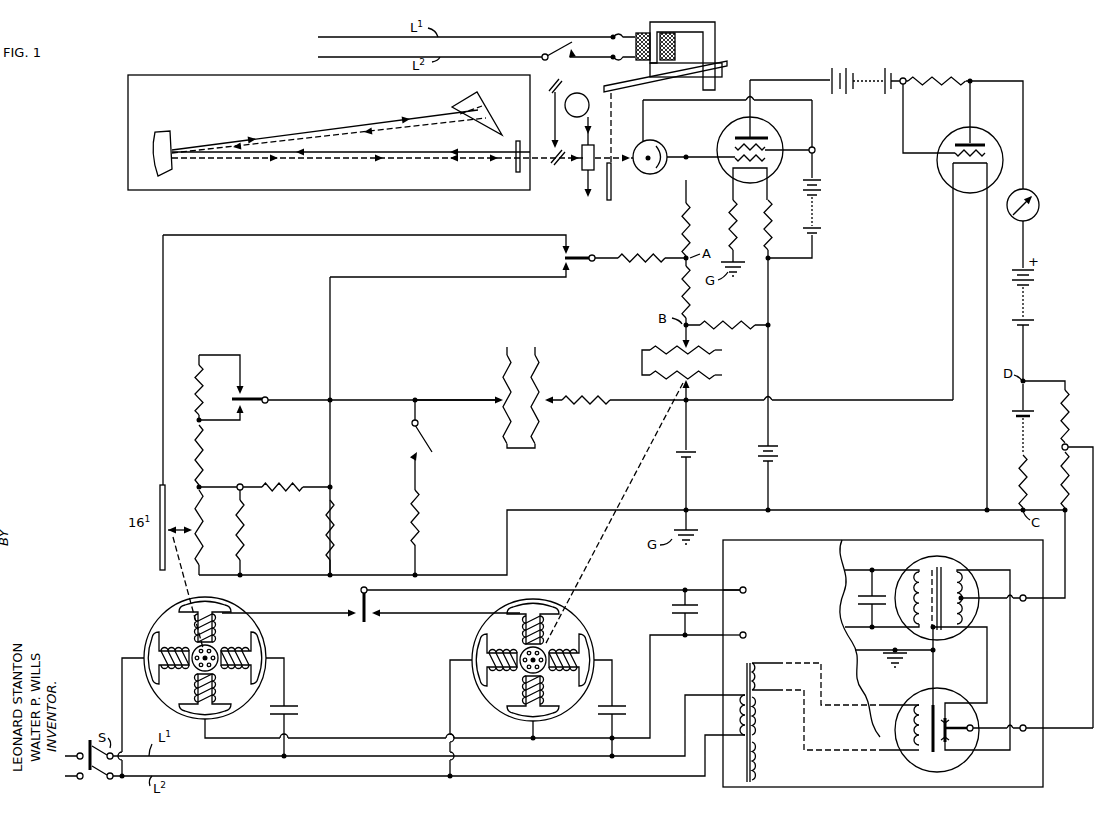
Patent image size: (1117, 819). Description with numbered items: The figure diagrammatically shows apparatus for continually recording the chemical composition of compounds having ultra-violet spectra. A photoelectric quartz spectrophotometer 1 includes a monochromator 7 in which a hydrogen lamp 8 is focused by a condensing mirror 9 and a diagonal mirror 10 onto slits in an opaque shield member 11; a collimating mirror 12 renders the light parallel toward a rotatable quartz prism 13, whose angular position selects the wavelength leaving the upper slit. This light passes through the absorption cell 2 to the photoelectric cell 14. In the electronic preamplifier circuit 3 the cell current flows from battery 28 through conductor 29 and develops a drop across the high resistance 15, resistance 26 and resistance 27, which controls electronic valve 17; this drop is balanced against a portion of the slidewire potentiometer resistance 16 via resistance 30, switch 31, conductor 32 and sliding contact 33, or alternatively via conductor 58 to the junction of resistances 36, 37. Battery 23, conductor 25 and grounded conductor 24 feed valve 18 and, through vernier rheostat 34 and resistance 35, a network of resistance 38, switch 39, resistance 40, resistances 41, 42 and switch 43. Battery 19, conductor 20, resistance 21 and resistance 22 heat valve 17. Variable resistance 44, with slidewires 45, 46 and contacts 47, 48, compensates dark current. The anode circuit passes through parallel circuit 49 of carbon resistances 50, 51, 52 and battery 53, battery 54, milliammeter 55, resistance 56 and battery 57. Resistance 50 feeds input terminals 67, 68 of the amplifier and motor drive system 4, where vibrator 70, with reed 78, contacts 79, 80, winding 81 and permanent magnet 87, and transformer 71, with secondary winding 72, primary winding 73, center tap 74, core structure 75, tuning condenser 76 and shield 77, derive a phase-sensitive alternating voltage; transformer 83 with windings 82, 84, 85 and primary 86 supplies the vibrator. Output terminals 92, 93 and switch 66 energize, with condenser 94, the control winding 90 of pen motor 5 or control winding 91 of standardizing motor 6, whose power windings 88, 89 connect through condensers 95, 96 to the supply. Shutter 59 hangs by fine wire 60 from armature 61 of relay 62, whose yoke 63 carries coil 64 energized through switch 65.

The photoelectric quartz spectrophotometer 1 is at (355, 121).
The absorption cell 2 is at (582, 174).
The electronic preamplifier circuit 3 is at (806, 60).
The electronic conversion amplifier and motor drive system 4 is at (790, 544).
The recording pen driving motor 5 is at (198, 658).
The dark current standardizing motor 6 is at (539, 660).
The monochromator 7 is at (346, 190).
The hydrogen lamp 8 is at (577, 92).
The condensing mirror 9 is at (547, 82).
The 45° diagonal mirror 10 is at (556, 167).
The opaque shield member 11 is at (516, 140).
The collimating mirror 12 is at (164, 133).
The rotatable quartz prism 13 is at (458, 105).
The photoelectric cell 14 is at (650, 144).
The resistance 15 is at (678, 222).
The slidewire potentiometer resistance 16 is at (203, 523).
The electronic valve 17 is at (740, 130).
The electronic valve 18 is at (978, 126).
The battery 19 is at (778, 456).
The conductor 20 is at (776, 426).
The resistance 21 is at (775, 206).
The resistance 22 is at (728, 215).
The battery 23 is at (693, 456).
The grounded conductor 24 is at (708, 511).
The conductor 25 is at (951, 352).
The resistance 26 is at (680, 285).
The resistance 27 is at (712, 322).
The battery 28 is at (820, 186).
The conductor 29 is at (816, 130).
The resistance 30 is at (622, 256).
The single pole-double throw switch 31 is at (582, 255).
The conductor 32 is at (418, 235).
The sliding contact 33 is at (182, 524).
The adjustable resistance 34 is at (518, 352).
The resistance 35 is at (580, 394).
The resistance 36 is at (340, 534).
The resistance 37 is at (290, 482).
The resistance 38 is at (426, 516).
The single pole-single throw switch 39 is at (425, 441).
The resistance 40 is at (252, 528).
The resistance 41 is at (203, 458).
The resistance 42 is at (203, 381).
The single pole-double throw switch 43 is at (247, 388).
The variable resistance 44 is at (696, 363).
The slidewire resistance 45 is at (718, 346).
The slidewire resistance 46 is at (719, 378).
The contact 47 is at (676, 342).
The contact 48 is at (690, 384).
The parallel circuit 49 is at (1049, 425).
The carbon resistance 50 is at (1060, 485).
The carbon resistance 51 is at (1060, 424).
The carbon resistance 52 is at (1020, 476).
The battery 53 is at (1010, 416).
The battery 54 is at (1036, 276).
The milliammeter 55 is at (1038, 202).
The resistance 56 is at (937, 74).
The battery 57 is at (848, 68).
The conductor 58 is at (418, 277).
The shutter 59 is at (613, 187).
The fine wire 60 is at (613, 120).
The armature 61 is at (727, 65).
The relay 62 is at (696, 50).
The U-shaped yoke member 63 is at (636, 28).
The coil 64 is at (665, 46).
The single pole-single throw switch 65 is at (542, 52).
The single pole-double throw switch 66 is at (360, 592).
The input terminal 67 is at (1023, 731).
The input terminal 68 is at (1023, 595).
The vibrator 70 is at (946, 730).
The transformer 71 is at (927, 648).
The secondary winding 72 is at (908, 591).
The primary winding 73 is at (974, 590).
The center tap 74 is at (974, 604).
The core structure 75 is at (934, 563).
The tuning condenser 76 is at (856, 610).
The shield 77 is at (922, 631).
The vibrating reed 78 is at (972, 728).
The stationary contact 79 is at (945, 747).
The stationary contact 80 is at (947, 718).
The winding 81 is at (906, 748).
The secondary winding 82 is at (777, 672).
The transformer 83 is at (751, 707).
The secondary winding 84 is at (773, 705).
The secondary winding 85 is at (780, 758).
The line voltage primary winding 86 is at (739, 713).
The permanent magnet 87 is at (930, 702).
The power winding 88 is at (193, 642).
The power winding 89 is at (525, 641).
The control winding 90 is at (196, 694).
The control winding 91 is at (522, 696).
The output terminal 92 is at (744, 634).
The output terminal 93 is at (746, 592).
The condenser 94 is at (672, 610).
The condenser 95 is at (293, 712).
The condenser 96 is at (624, 708).